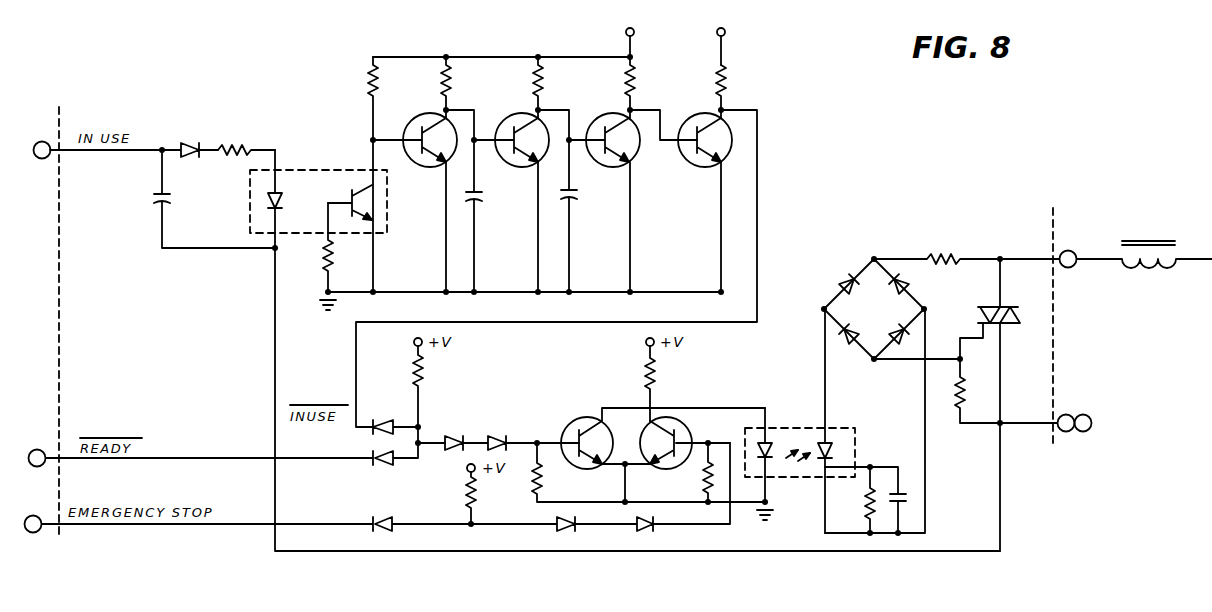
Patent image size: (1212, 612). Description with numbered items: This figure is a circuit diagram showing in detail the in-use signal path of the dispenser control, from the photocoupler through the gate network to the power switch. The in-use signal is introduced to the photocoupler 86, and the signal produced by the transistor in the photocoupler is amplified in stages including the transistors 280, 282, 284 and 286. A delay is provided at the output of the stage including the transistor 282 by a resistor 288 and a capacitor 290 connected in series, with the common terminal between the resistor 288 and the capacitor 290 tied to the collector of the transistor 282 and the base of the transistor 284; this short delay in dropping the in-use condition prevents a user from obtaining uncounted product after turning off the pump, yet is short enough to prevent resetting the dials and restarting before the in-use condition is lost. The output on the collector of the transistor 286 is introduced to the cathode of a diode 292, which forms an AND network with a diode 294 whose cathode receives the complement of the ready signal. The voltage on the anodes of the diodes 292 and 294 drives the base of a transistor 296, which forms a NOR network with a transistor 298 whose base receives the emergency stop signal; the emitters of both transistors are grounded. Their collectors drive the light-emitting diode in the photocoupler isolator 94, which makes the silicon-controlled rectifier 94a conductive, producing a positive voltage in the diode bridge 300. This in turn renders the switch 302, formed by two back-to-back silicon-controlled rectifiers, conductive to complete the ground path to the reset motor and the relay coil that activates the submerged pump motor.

The photocoupler 86 is at (303, 170).
The transistor 280 is at (418, 166).
The transistor 282 is at (512, 167).
The transistor 284 is at (628, 158).
The transistor 286 is at (732, 148).
The resistor 288 is at (545, 85).
The capacitor 290 is at (579, 196).
The diode 292 is at (383, 425).
The diode 294 is at (390, 468).
The transistor 296 is at (585, 417).
The transistor 298 is at (712, 405).
The diode bridge 300 is at (915, 287).
The switch 302 is at (1027, 313).
The photocoupler isolator 94 is at (822, 421).
The silicon-controlled rectifier 94a is at (833, 453).